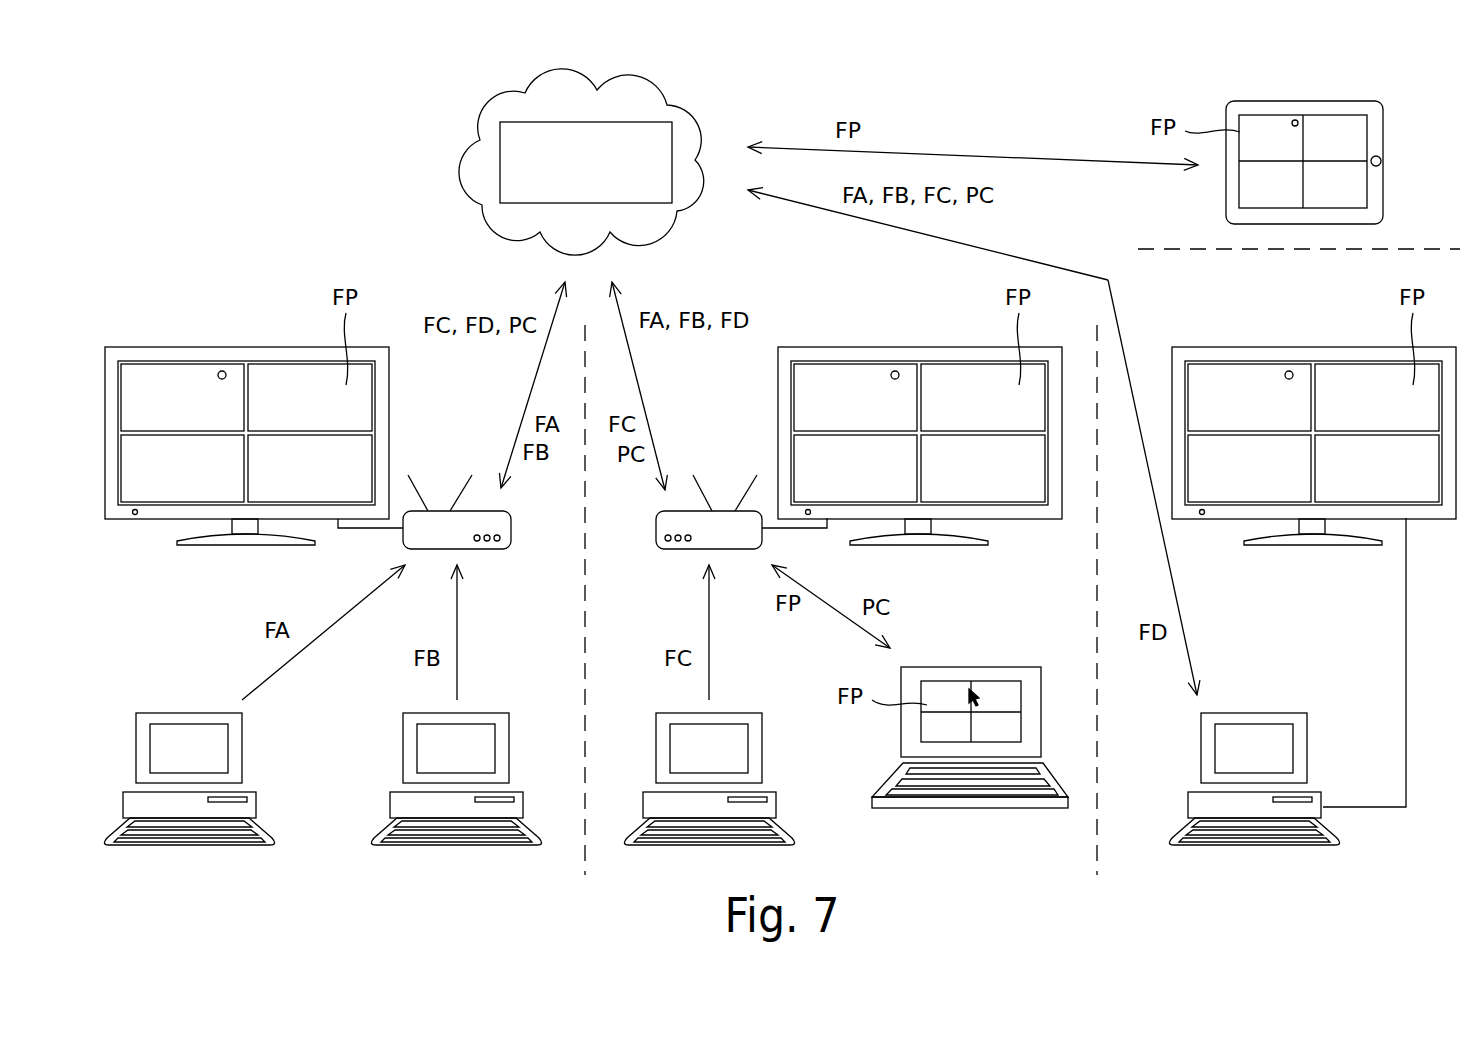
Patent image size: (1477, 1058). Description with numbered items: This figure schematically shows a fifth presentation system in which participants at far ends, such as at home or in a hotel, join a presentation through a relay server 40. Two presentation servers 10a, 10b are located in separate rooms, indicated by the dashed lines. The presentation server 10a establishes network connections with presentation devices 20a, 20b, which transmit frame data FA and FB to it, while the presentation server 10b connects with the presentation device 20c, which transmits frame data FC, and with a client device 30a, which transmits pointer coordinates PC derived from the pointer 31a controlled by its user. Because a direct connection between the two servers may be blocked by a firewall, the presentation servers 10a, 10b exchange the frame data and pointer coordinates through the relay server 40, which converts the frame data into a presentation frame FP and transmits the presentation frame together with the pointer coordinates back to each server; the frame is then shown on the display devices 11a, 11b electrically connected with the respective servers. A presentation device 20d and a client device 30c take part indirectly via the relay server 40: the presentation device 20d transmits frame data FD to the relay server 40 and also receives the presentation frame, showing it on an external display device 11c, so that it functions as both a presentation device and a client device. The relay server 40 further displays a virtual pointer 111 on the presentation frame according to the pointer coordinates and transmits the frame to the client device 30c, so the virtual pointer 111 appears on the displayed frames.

The relay server 40 is at (500, 133).
The virtual pointer 111 is at (222, 371).
The display device 11a is at (156, 347).
The display device 11b is at (920, 411).
The external display device 11c is at (1314, 411).
The presentation server 10a is at (511, 527).
The presentation server 10b is at (656, 539).
The presentation device 20a is at (165, 713).
The presentation device 20b is at (456, 746).
The presentation device 20c is at (709, 746).
The presentation device 20d is at (1254, 745).
The client device 30a is at (947, 667).
The client device 30c is at (1383, 134).
The pointer 31a is at (975, 692).